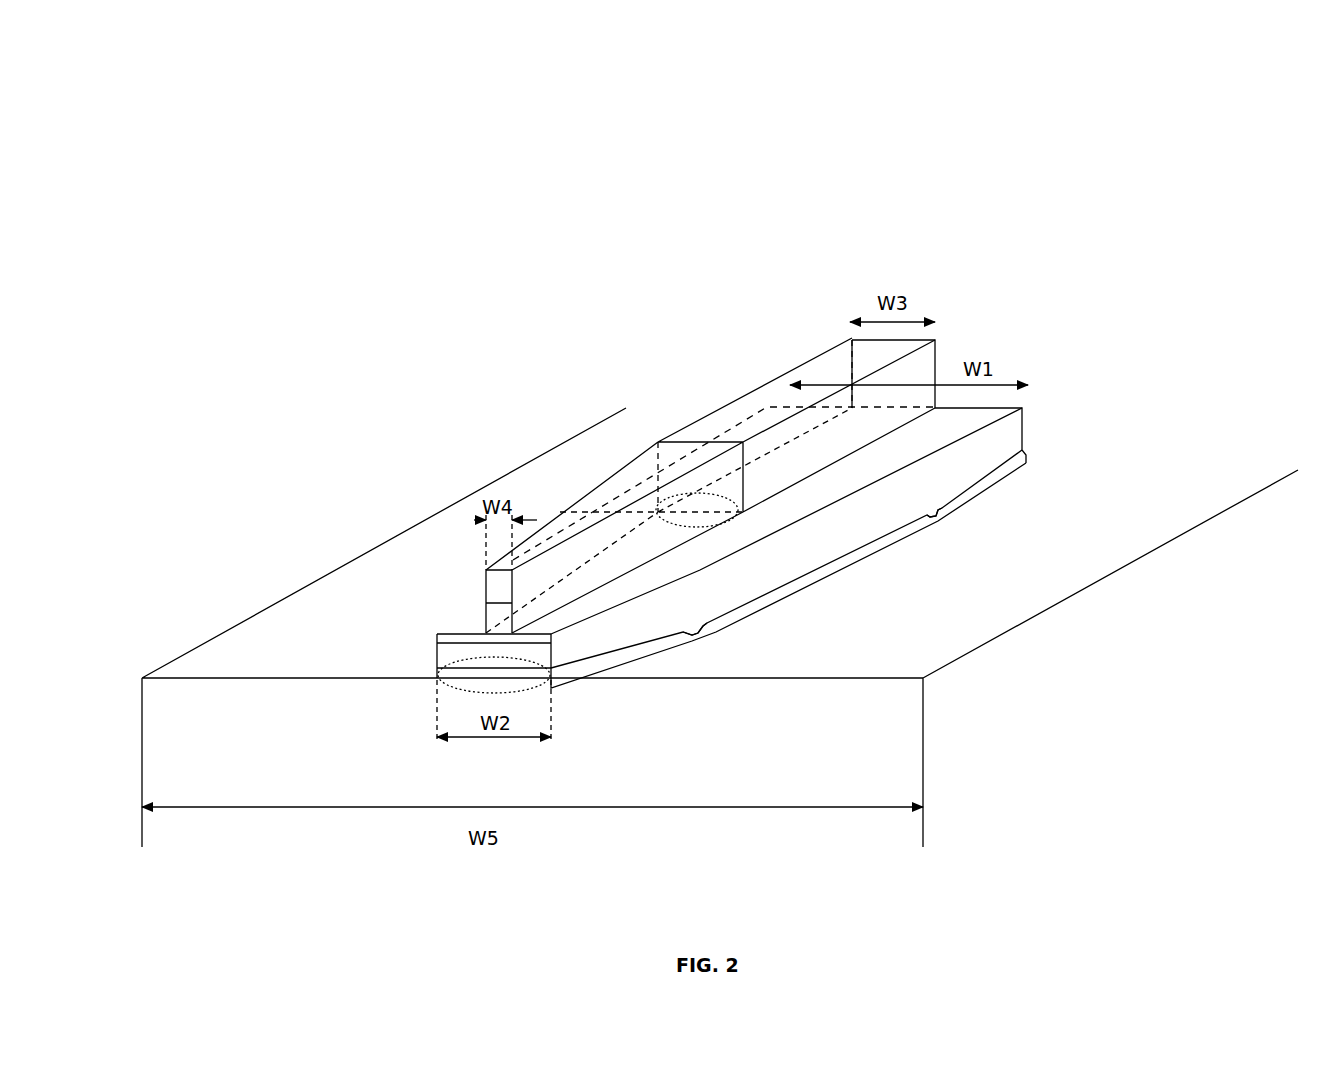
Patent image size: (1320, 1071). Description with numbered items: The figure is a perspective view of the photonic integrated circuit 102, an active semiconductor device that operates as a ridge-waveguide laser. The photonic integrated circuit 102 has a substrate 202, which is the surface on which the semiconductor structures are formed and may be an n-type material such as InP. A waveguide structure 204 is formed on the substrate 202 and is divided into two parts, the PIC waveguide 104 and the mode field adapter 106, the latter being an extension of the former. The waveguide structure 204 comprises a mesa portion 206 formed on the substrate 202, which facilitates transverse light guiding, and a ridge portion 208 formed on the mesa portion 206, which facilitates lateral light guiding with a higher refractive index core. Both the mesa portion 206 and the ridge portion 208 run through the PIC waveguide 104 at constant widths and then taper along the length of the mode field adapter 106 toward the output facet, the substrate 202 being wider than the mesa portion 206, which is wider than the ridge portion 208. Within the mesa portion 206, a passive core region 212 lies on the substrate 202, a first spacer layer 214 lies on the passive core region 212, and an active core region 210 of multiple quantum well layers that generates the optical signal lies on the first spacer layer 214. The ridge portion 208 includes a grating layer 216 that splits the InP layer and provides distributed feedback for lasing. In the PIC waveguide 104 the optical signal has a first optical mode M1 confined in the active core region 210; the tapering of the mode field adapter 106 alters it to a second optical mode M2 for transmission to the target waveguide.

The photonic integrated circuit 102 is at (100, 112).
The PIC waveguide 104 is at (959, 523).
The mode field adapter 106 is at (722, 638).
The substrate 202 is at (720, 627).
The waveguide structure 204 is at (990, 328).
The mesa portion 206 is at (988, 447).
The ridge portion 208 is at (765, 418).
The active core region 210 is at (453, 637).
The passive core region 212 is at (530, 678).
The first spacer layer 214 is at (450, 647).
The grating layer 216 is at (497, 605).
The first optical mode M1 is at (730, 505).
The second optical mode M2 is at (450, 687).